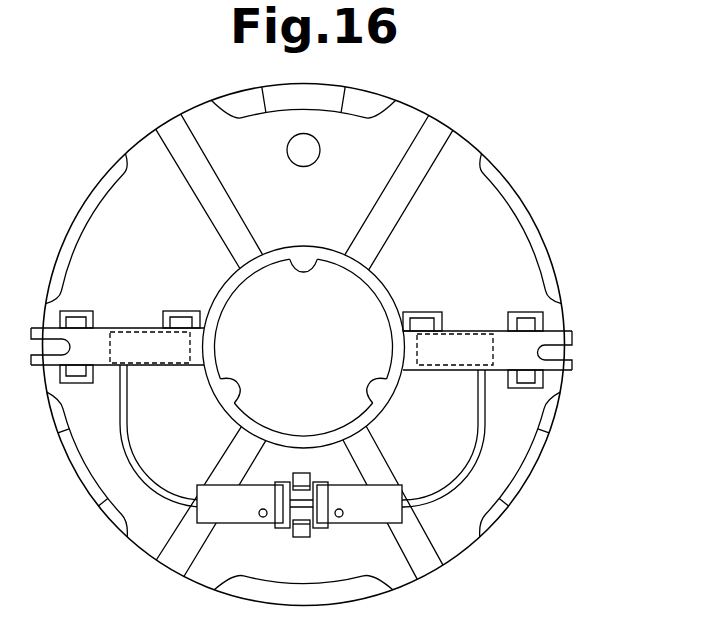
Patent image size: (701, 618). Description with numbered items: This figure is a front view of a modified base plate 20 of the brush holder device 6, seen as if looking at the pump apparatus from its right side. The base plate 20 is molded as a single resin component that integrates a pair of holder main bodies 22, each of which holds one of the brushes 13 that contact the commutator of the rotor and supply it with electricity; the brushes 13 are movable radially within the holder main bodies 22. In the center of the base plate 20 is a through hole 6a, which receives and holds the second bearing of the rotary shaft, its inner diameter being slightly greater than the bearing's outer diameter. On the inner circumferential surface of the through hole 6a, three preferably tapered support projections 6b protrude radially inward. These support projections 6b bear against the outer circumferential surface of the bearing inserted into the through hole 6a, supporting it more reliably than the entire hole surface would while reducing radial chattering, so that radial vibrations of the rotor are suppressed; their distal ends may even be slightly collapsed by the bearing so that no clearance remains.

The brush holder device 6 is at (567, 266).
The through hole 6a is at (378, 299).
The support projections 6b is at (303, 275).
The brushes 13 is at (157, 363).
The base plate 20 is at (552, 380).
The holder main bodies 22 is at (119, 327).